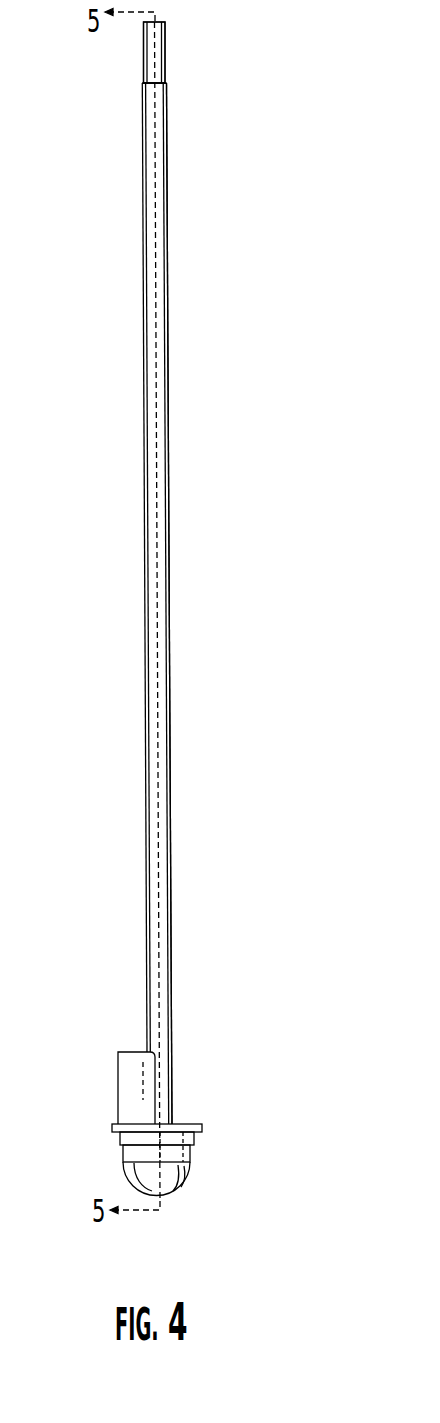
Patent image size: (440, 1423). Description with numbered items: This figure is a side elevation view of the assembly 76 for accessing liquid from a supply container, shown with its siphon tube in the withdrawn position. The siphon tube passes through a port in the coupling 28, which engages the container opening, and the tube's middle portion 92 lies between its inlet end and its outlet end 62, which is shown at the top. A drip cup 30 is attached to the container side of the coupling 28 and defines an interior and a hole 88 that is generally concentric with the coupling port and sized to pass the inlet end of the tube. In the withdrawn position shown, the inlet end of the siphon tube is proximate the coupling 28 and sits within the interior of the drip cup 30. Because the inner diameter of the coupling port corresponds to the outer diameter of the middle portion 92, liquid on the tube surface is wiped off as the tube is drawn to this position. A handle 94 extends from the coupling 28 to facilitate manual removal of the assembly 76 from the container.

The coupling 28 is at (198, 1137).
The drip cup 30 is at (182, 1183).
The outlet end 62 is at (165, 42).
The assembly 76 is at (97, 507).
The hole 88 is at (142, 1198).
The middle portion 92 is at (168, 462).
The handle 94 is at (118, 1070).